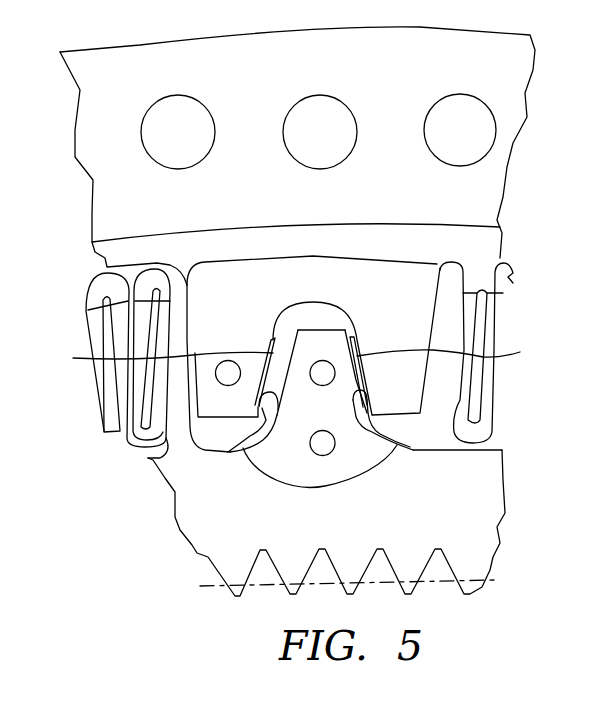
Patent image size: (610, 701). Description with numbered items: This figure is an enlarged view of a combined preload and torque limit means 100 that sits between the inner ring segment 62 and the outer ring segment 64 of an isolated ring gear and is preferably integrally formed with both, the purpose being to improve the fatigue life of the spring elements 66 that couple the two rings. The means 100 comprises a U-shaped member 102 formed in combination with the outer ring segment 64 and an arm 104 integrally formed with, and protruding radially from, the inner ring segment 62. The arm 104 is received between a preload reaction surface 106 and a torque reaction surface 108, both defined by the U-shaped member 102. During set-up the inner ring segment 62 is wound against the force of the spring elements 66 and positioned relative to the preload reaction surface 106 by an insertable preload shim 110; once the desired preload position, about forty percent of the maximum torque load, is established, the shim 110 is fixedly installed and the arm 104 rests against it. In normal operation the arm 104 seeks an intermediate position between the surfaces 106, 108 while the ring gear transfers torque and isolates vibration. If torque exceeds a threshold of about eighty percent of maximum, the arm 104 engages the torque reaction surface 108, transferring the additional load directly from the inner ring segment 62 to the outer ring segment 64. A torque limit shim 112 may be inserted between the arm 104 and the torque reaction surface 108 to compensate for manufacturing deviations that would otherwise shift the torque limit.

The inner ring segment 62 is at (333, 528).
The outer ring segment 64 is at (242, 78).
The spring elements 66 is at (512, 278).
The combined preload and torque limit means 100 is at (388, 360).
The U-shaped member 102 is at (213, 307).
The arm 104 is at (345, 421).
The preload reaction surface 106 is at (397, 443).
The torque reaction surface 108 is at (237, 449).
The preload shim 110 is at (461, 352).
The torque limit shim 112 is at (148, 353).